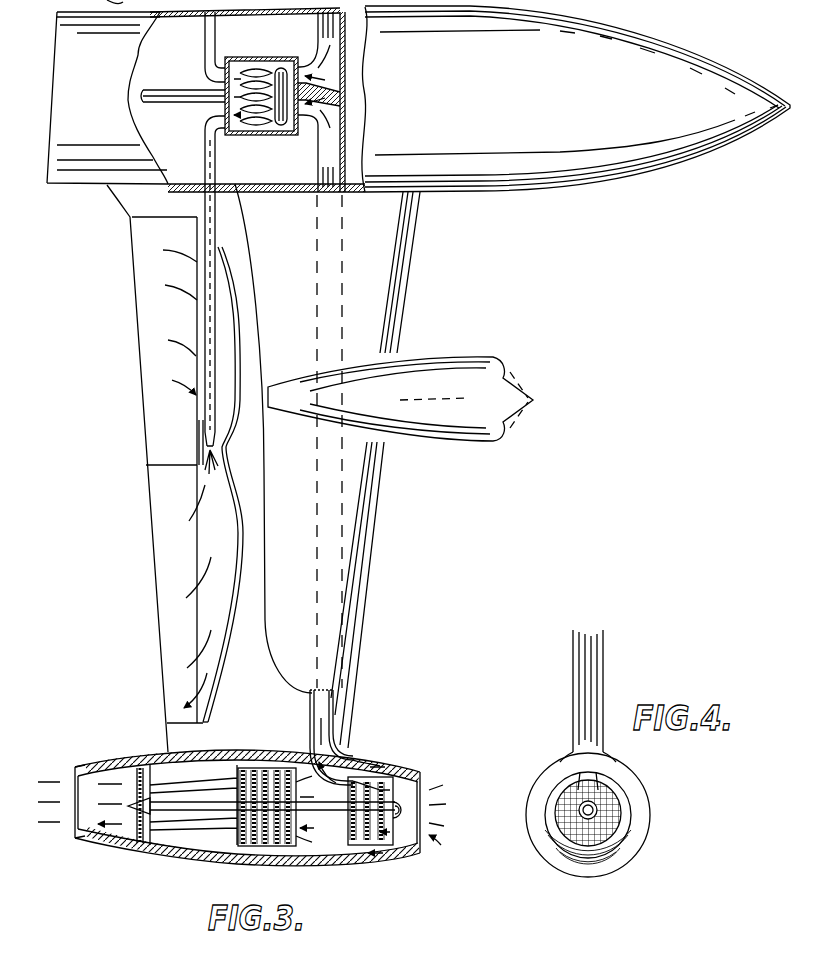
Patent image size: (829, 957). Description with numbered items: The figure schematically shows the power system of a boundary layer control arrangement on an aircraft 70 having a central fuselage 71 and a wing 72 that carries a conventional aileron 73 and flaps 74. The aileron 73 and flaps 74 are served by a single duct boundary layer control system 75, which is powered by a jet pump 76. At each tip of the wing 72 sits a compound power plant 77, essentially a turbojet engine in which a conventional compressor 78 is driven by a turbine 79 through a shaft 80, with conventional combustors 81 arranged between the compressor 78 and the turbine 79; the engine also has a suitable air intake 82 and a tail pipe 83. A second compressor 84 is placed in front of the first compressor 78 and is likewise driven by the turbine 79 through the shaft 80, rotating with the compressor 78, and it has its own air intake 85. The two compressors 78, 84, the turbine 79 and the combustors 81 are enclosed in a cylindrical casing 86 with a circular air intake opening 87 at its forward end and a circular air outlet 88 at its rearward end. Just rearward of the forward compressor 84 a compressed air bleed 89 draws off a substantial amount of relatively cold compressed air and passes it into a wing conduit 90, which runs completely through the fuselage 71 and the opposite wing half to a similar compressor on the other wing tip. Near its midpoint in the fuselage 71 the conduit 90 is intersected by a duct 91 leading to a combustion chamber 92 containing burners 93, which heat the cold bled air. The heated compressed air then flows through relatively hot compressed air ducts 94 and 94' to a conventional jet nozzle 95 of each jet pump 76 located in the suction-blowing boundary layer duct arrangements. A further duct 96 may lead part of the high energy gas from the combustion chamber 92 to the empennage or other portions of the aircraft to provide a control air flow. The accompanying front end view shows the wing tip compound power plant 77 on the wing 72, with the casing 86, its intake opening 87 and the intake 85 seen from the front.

In FIG. 3, the aircraft 70 is at (612, 190).
In FIG. 3, the central fuselage 71 is at (452, 193).
In FIG. 3, the wing 72 is at (380, 547).
In FIG. 4, the wing 72 is at (606, 668).
In FIG. 3, the aileron 73 is at (152, 568).
In FIG. 3, the flaps 74 is at (133, 352).
In FIG. 3, the single duct boundary layer control system 75 is at (223, 573).
In FIG. 3, the jet pump 76 is at (232, 442).
In FIG. 3, the compound power plant 77 is at (200, 864).
In FIG. 4, the compound power plant 77 is at (533, 848).
In FIG. 3, the compressor 78 is at (260, 848).
In FIG. 3, the turbine 79 is at (130, 848).
In FIG. 3, the shaft 80 is at (178, 812).
In FIG. 3, the combustors 81 is at (190, 845).
In FIG. 3, the air intake 82 is at (297, 852).
In FIG. 3, the tail pipe 83 is at (90, 848).
In FIG. 3, the second compressor 84 is at (368, 846).
In FIG. 3, the air intake 85 is at (400, 843).
In FIG. 4, the air intake 85 is at (624, 840).
In FIG. 3, the cylindrical casing 86 is at (402, 778).
In FIG. 4, the cylindrical casing 86 is at (573, 875).
In FIG. 3, the circular air intake opening 87 is at (420, 855).
In FIG. 4, the circular air intake opening 87 is at (602, 870).
In FIG. 3, the circular air outlet 88 is at (72, 835).
In FIG. 3, the compressed air bleed 89 is at (353, 765).
In FIG. 3, the wing conduit 90 is at (310, 698).
In FIG. 3, the duct 91 is at (305, 137).
In FIG. 3, the combustion chamber 92 is at (241, 137).
In FIG. 3, the burners 93 is at (278, 132).
In FIG. 3, the hot compressed air duct 94 is at (225, 281).
In FIG. 3, the hot compressed air duct 94' is at (199, 47).
In FIG. 3, the jet nozzle 95 is at (203, 420).
In FIG. 3, the duct 96 is at (158, 91).